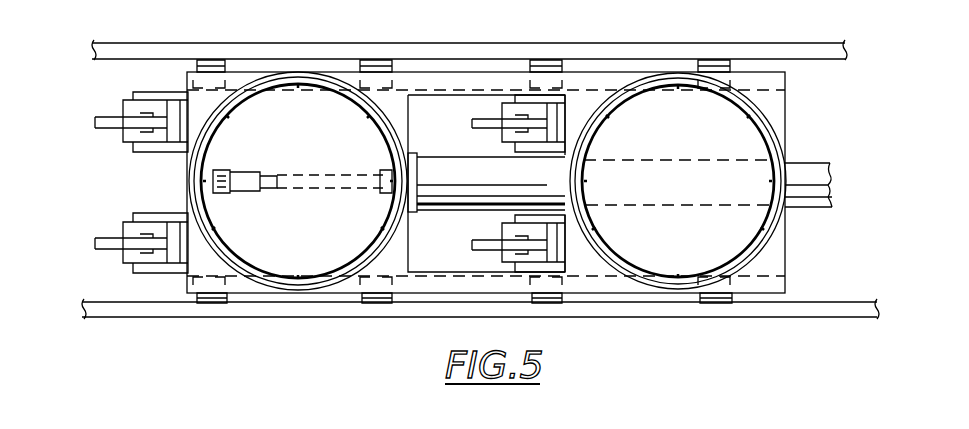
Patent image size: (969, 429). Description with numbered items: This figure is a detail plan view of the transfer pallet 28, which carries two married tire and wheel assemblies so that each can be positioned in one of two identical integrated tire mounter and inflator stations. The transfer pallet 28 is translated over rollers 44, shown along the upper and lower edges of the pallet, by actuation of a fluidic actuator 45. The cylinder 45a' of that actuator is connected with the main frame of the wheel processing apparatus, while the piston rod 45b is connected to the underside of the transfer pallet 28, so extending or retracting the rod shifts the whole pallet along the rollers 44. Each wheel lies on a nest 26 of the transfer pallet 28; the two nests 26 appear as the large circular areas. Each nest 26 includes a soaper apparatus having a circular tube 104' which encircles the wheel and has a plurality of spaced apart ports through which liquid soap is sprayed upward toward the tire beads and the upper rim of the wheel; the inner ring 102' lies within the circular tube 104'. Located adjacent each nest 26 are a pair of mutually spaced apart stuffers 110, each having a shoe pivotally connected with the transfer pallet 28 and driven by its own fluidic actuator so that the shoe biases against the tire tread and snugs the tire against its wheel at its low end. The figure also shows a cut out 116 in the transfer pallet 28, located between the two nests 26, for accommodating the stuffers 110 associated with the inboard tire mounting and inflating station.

The nest 26 is at (302, 136).
The transfer pallet 28 is at (786, 258).
The rollers 44 is at (567, 60).
The fluidic actuator 45 is at (427, 222).
The right workpiece receiving position 45a' is at (678, 202).
The piston rod 45b is at (347, 170).
The inner heavy ring 102' is at (487, 181).
The circular tube 104' is at (519, 181).
The stuffers 110 is at (126, 205).
The cut out 116 is at (475, 96).